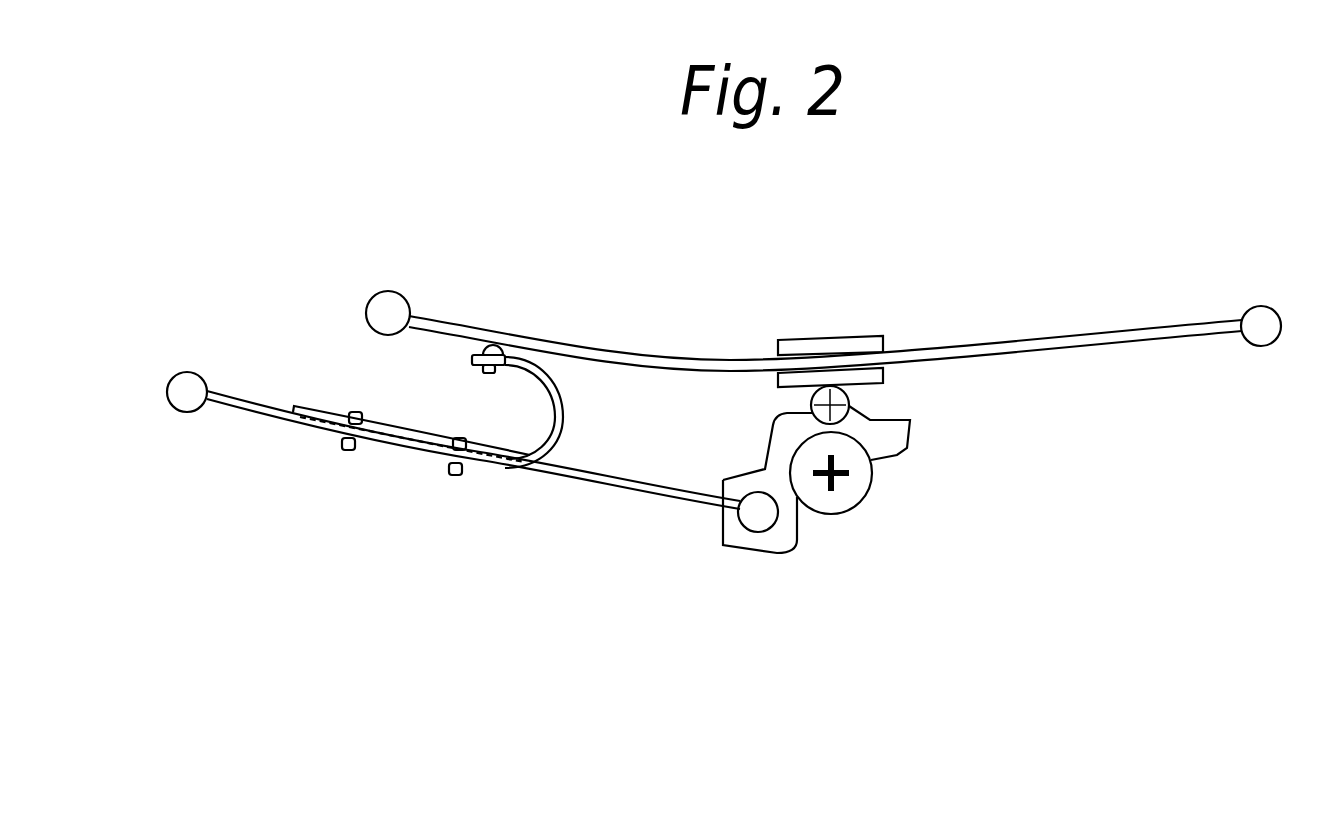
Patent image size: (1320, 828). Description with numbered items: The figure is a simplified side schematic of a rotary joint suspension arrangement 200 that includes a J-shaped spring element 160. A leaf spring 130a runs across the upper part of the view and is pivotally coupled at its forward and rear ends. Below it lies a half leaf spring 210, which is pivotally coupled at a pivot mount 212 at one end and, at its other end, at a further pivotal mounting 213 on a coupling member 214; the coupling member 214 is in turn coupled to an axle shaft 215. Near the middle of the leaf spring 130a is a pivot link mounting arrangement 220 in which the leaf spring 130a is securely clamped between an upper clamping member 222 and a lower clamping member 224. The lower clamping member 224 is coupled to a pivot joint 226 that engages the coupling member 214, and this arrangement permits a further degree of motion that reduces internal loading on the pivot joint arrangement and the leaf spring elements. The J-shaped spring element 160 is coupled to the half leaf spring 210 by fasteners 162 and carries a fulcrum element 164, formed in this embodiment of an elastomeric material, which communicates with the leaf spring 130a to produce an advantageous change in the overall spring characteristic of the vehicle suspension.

The rotary joint suspension arrangement 200 is at (650, 647).
The leaf spring 130a is at (632, 357).
The fulcrum element 164 is at (487, 349).
The J-shaped spring element 160 is at (553, 428).
The fasteners 162 is at (458, 437).
The half leaf spring 210 is at (453, 460).
The pivot mount 212 is at (185, 402).
The pivotal mounting 213 is at (750, 520).
The coupling member 214 is at (777, 491).
The axle shaft 215 is at (845, 495).
The pivot link mounting arrangement 220 is at (838, 333).
The clamping member 222 is at (853, 340).
The clamping member 224 is at (863, 377).
The pivot joint 226 is at (782, 401).